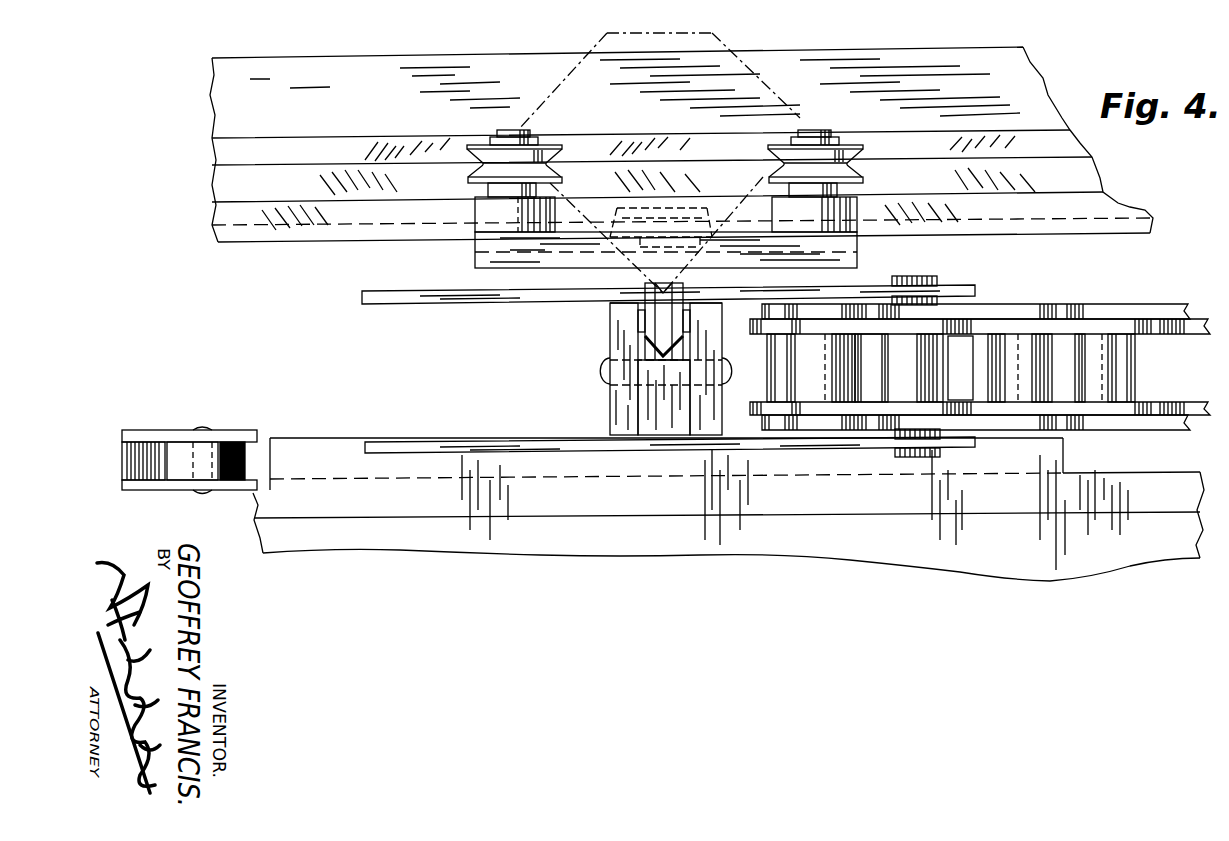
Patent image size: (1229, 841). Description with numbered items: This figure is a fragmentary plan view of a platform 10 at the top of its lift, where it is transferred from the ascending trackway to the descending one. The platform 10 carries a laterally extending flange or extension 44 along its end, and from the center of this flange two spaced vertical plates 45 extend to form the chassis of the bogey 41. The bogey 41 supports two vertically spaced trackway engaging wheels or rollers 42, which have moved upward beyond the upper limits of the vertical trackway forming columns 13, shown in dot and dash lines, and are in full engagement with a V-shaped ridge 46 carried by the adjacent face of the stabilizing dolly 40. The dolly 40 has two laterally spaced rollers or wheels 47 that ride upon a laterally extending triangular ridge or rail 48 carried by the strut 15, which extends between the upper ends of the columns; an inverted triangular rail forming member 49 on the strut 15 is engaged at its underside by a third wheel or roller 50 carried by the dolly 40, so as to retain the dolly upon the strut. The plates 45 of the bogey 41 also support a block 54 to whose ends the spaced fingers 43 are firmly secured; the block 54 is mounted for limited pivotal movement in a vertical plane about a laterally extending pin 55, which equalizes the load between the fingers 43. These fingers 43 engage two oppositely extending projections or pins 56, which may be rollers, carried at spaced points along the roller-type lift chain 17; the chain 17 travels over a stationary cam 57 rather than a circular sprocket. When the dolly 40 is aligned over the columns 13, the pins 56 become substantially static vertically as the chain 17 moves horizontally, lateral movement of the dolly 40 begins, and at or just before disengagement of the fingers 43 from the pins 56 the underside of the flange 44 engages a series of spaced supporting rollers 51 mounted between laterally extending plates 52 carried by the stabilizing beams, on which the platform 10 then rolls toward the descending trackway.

The platform 10 is at (808, 545).
The vertical trackway forming column 13 is at (548, 103).
The strut 15 is at (300, 104).
The chain 17 is at (1097, 306).
The stabilizing dolly 40 is at (475, 257).
The bogey 41 is at (712, 326).
The trackway engaging wheel or roller 42 is at (640, 318).
The finger 43 is at (408, 300).
The flange or extension 44 is at (306, 458).
The vertical plate 45 is at (624, 419).
The V-shaped ridge 46 is at (648, 281).
The roller or wheel 47 is at (482, 147).
The triangular ridge or rail 48 is at (272, 163).
The inverted triangular rail forming member 49 is at (243, 234).
The third wheel or roller 50 is at (703, 207).
The roller 51 is at (178, 450).
The plate 52 is at (232, 432).
The block 54 is at (656, 427).
The pin 55 is at (606, 372).
The projection or pin 56 is at (922, 288).
The stationary cam 57 is at (963, 358).